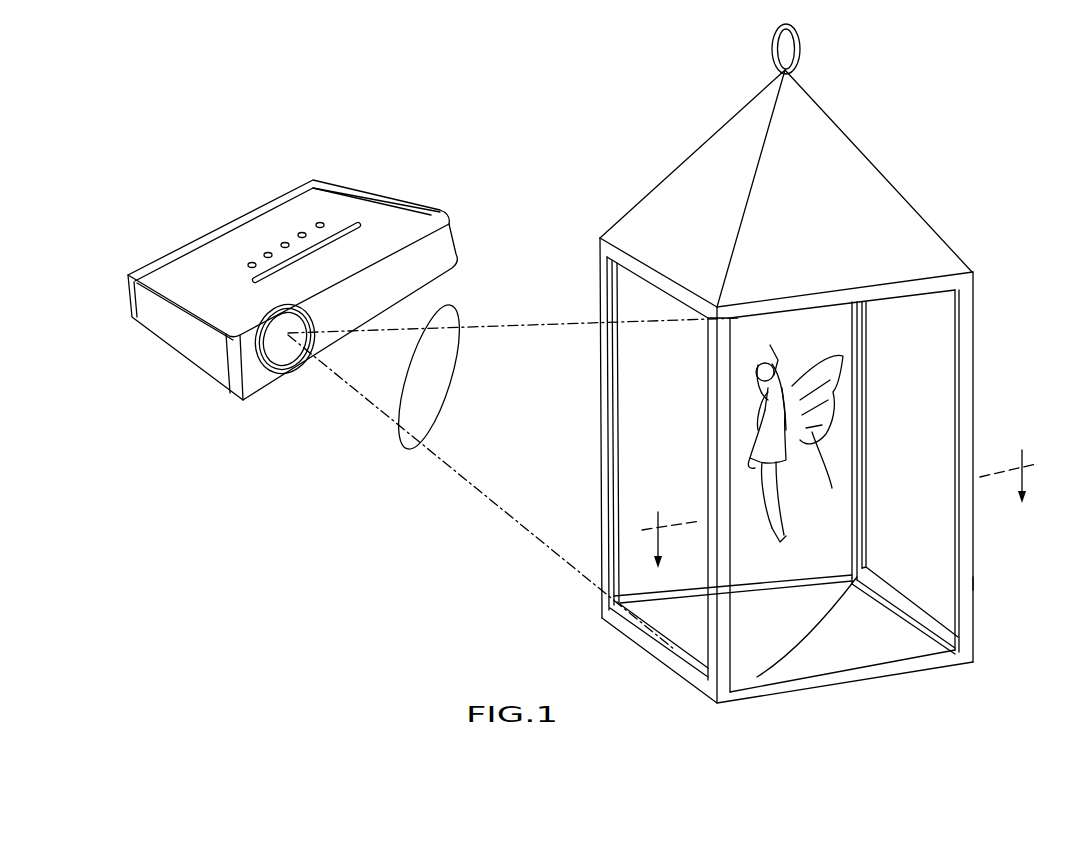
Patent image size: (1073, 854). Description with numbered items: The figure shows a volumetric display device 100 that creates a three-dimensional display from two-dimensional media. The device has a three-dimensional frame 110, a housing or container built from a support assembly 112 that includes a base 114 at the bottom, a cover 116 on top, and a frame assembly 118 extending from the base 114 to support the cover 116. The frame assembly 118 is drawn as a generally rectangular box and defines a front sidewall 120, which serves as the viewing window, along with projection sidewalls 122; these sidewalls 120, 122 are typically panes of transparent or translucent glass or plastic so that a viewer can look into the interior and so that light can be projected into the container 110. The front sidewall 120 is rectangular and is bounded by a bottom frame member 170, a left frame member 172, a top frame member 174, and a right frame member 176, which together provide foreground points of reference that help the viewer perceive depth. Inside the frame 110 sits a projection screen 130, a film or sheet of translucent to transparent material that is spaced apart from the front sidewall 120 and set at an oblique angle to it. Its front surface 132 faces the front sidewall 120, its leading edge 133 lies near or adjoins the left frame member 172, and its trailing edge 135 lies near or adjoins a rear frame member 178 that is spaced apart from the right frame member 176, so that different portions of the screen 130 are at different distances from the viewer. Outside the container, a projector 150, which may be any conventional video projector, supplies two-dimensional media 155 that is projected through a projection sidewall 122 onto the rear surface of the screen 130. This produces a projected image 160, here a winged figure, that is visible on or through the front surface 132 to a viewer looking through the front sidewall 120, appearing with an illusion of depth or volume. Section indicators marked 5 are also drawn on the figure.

The volumetric display device 100 is at (903, 81).
The 3D frame 110 is at (986, 694).
The support assembly 112 is at (997, 419).
The base 114 is at (895, 617).
The cover 116 is at (884, 176).
The frame assembly 118 is at (984, 582).
The front sidewall 120 is at (915, 323).
The projection sidewalls 122 is at (622, 309).
The projection screen 130 is at (741, 627).
The front surface 132 is at (757, 642).
The leading edge 133 is at (743, 525).
The trailing edge 135 is at (838, 433).
The projector 150 is at (121, 250).
The 2D media 155 is at (462, 316).
The projected image 160 is at (793, 525).
The bottom frame member 170 is at (882, 668).
The left frame member 172 is at (725, 440).
The top frame member 174 is at (830, 298).
The right frame member 176 is at (966, 351).
The rear frame member 178 is at (868, 378).
The section line 5 is at (841, 509).